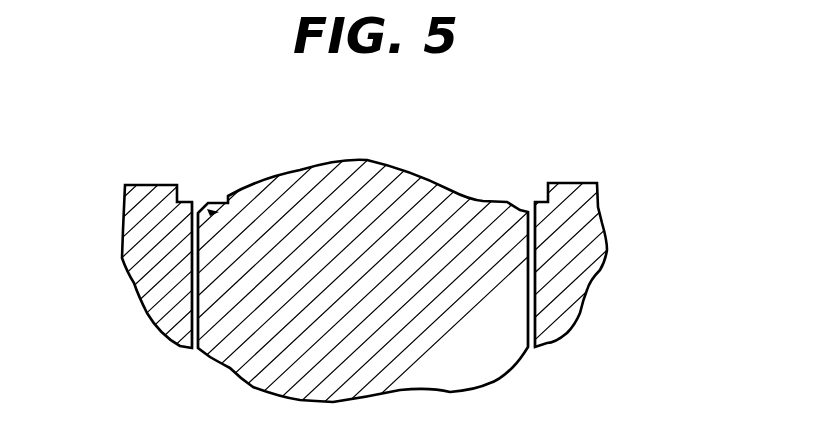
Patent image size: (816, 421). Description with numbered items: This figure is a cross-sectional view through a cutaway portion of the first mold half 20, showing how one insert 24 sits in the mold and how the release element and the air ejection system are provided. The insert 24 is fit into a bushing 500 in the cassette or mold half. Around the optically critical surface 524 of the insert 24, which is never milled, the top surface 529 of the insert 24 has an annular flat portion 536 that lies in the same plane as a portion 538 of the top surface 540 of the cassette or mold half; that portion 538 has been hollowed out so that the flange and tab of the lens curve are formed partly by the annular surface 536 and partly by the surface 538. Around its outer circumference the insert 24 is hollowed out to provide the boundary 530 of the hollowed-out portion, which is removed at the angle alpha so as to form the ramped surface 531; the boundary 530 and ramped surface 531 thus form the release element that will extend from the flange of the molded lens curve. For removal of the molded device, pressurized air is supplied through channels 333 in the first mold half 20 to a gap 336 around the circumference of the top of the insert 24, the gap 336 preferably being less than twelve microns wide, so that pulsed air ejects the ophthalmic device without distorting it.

The first mold half 20 is at (140, 293).
The insert 24 is at (353, 252).
The channels 333 is at (193, 345).
The gap 336 is at (197, 207).
The bushing 500 is at (535, 277).
The optically critical surface 524 is at (341, 160).
The top surface of the insert 529 is at (227, 201).
The boundary 530 is at (524, 207).
The ramped surface 531 is at (200, 211).
The annular flat portion 536 is at (500, 198).
The portion of the top surface of the cassette 538 is at (542, 200).
The top surface of the cassette 540 is at (580, 183).